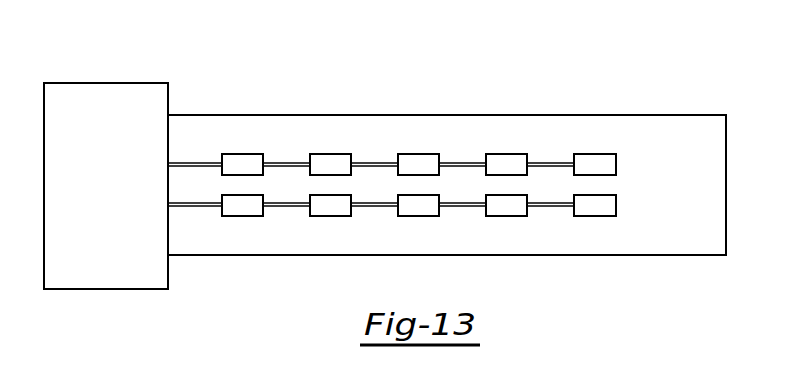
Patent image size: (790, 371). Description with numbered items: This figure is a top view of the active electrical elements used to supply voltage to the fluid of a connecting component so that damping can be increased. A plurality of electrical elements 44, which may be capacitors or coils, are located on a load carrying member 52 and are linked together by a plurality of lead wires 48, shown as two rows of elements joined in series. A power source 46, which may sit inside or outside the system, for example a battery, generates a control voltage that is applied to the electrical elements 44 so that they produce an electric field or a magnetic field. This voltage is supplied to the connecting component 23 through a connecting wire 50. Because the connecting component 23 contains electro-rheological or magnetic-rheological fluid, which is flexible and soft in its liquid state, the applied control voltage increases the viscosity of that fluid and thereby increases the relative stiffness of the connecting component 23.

The connecting component 23 is at (127, 108).
The electrical elements 44 is at (244, 154).
The power source 46 is at (330, 154).
The lead wires 48 is at (288, 209).
The connecting wire 50 is at (203, 209).
The load carrying member 52 is at (685, 137).